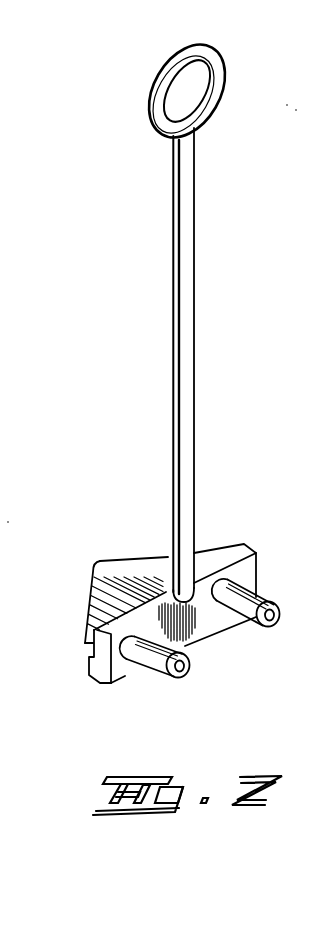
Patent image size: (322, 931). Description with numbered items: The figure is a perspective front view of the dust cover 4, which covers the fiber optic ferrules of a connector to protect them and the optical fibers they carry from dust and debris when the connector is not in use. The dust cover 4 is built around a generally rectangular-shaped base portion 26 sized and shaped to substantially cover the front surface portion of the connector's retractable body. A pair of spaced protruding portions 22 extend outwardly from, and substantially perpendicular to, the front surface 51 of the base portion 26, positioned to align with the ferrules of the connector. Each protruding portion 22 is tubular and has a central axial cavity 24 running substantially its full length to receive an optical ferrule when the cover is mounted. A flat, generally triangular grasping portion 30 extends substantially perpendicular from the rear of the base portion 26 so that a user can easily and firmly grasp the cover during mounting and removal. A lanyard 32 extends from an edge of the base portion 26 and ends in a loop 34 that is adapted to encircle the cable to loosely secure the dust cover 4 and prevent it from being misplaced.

The dust cover 4 is at (222, 348).
The protruding portion 22 is at (155, 677).
The central axial cavity 24 is at (186, 669).
The base portion 26 is at (235, 553).
The grasping portion 30 is at (138, 568).
The lanyard 32 is at (156, 310).
The loop 34 is at (212, 63).
The front surface 51 is at (127, 663).